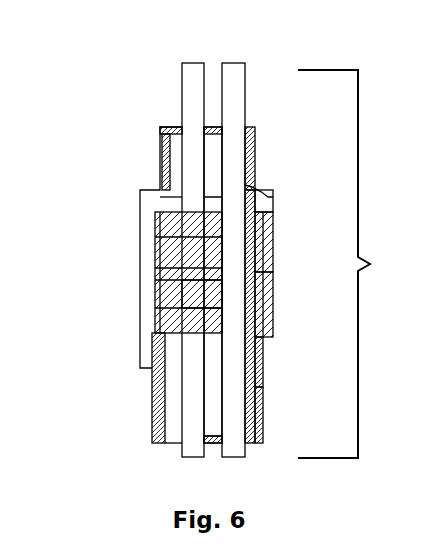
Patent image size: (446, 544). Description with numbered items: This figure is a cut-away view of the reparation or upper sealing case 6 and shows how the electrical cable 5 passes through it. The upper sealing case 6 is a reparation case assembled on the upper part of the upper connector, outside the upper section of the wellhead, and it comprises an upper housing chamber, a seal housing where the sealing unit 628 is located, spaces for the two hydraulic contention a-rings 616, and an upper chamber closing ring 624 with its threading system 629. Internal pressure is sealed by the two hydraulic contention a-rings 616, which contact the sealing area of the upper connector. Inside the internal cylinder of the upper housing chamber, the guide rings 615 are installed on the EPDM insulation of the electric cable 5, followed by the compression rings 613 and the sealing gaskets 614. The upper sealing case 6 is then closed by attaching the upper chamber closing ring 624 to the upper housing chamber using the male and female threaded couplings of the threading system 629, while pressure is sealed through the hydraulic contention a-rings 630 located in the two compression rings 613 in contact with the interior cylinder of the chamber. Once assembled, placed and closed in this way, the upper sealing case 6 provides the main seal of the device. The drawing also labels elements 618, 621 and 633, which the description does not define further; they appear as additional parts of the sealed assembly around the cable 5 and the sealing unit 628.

The electrical cable 5 is at (233, 83).
The upper sealing case 6 is at (353, 264).
The compression rings 613 is at (172, 296).
The sealing gaskets 614 is at (225, 285).
The guide rings 615 is at (165, 320).
The hydraulic contention a-rings 616 is at (248, 135).
The lower sleeve 618 is at (258, 385).
The inner liner 621 is at (245, 272).
The upper chamber closing ring 624 is at (260, 202).
The sealing unit 628 is at (258, 350).
The threading system 629 is at (265, 250).
The hydraulic contention a-rings 630 is at (255, 303).
The lower housing column 633 is at (153, 413).